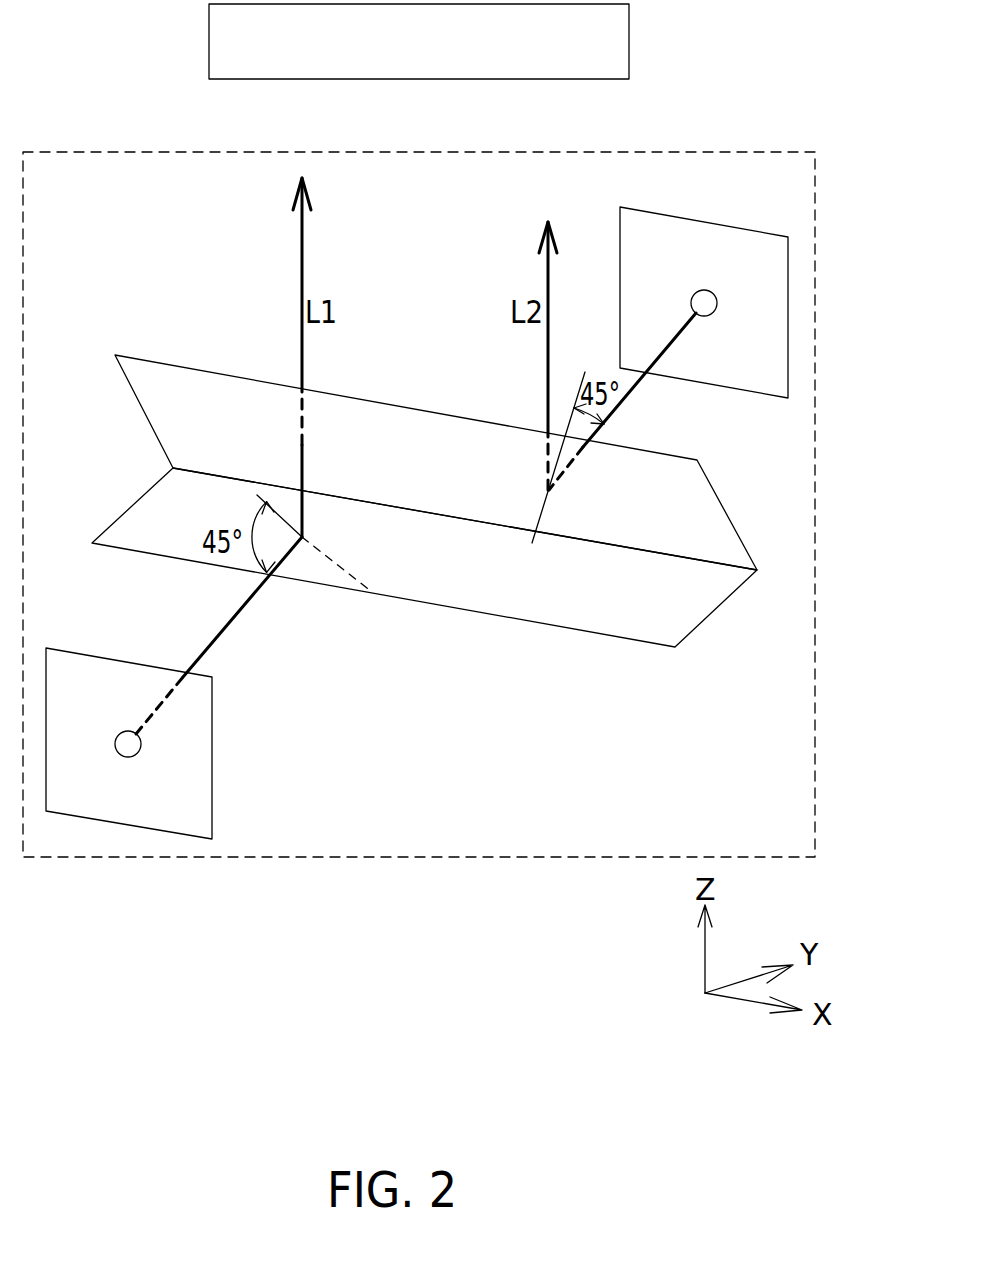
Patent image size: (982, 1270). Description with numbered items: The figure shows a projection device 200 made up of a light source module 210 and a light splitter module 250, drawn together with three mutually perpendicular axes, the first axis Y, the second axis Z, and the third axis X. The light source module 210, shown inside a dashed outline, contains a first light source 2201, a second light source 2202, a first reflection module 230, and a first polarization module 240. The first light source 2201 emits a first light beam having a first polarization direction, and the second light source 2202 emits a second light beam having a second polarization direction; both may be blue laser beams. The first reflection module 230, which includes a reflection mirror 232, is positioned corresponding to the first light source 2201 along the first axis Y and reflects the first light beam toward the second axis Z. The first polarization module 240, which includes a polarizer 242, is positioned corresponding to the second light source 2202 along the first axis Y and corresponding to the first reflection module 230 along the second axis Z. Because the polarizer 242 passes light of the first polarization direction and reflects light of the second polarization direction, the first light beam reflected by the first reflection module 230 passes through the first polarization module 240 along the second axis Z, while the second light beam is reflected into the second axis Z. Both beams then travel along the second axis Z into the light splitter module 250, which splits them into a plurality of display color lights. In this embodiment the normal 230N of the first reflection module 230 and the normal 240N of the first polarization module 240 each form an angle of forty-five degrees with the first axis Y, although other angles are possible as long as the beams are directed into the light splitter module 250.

The projection device 200 is at (717, 96).
The light source module 210 is at (418, 857).
The light splitter module 250 is at (209, 42).
The first reflection module 230 is at (426, 557).
The reflection mirror 232 is at (142, 517).
The first polarization module 240 is at (456, 417).
The polarizer 242 is at (168, 388).
The first light source 2201 is at (141, 744).
The second light source 2202 is at (704, 290).
The normal of the first reflection module 230N is at (372, 592).
The normal of the first polarization module 240N is at (574, 440).